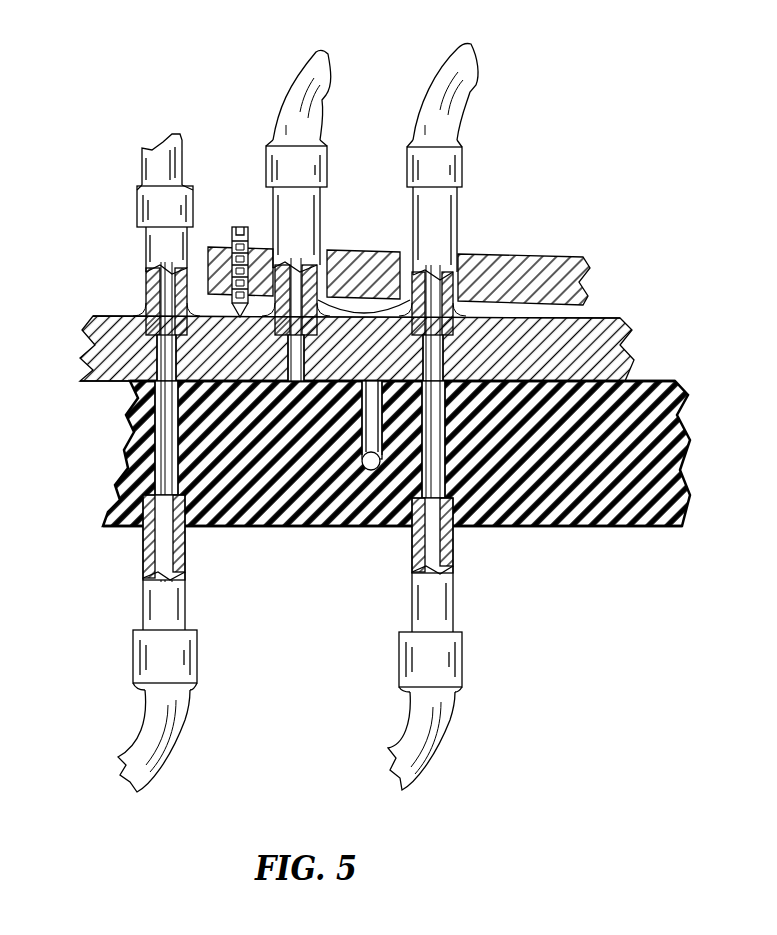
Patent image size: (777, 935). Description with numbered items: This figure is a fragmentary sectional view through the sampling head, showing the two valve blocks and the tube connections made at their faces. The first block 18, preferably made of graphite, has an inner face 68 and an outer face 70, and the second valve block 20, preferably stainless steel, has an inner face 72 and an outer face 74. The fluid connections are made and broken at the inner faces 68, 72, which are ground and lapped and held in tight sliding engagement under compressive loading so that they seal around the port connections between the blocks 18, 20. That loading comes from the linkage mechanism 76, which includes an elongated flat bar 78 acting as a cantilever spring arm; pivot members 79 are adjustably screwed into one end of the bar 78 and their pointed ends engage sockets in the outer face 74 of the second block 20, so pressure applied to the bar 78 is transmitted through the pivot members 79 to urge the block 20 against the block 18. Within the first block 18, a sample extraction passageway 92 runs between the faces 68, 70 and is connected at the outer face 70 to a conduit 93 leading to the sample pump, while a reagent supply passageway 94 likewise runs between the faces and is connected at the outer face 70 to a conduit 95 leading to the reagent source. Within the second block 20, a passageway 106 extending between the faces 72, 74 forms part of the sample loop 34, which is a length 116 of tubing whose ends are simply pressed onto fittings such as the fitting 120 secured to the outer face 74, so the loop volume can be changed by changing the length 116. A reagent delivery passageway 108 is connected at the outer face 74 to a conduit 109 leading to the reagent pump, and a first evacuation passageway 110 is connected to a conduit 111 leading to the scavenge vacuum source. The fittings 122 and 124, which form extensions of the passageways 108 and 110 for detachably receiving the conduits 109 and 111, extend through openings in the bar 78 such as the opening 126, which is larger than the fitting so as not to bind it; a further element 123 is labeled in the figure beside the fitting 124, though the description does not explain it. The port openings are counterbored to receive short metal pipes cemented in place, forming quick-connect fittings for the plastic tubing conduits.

The first block 18 is at (672, 456).
The second valve block 20 is at (600, 345).
The sample loop 34 is at (126, 201).
The inner face 68 is at (665, 382).
The outer face 70 is at (638, 528).
The inner face 72 is at (107, 382).
The outer face 74 is at (143, 314).
The linkage mechanism 76 is at (530, 256).
The elongated flat bar 78 is at (560, 268).
The pivot members 79 is at (238, 235).
The sample extraction passageway 92 is at (167, 451).
The tube or conduit 93 is at (150, 735).
The reagent supply passageway 94 is at (432, 457).
The conduit 95 is at (430, 735).
The second passageway 106 is at (167, 355).
The reagent delivery passageway 108 is at (433, 361).
The conduit 109 is at (445, 70).
The first evacuation passageway 110 is at (297, 350).
The conduit 111 is at (300, 76).
The length of tubing 116 is at (155, 165).
The fitting 120 is at (150, 248).
The fitting 122 is at (455, 205).
The inner tube 123 is at (300, 256).
The fitting 124 is at (300, 202).
The opening 126 is at (455, 248).